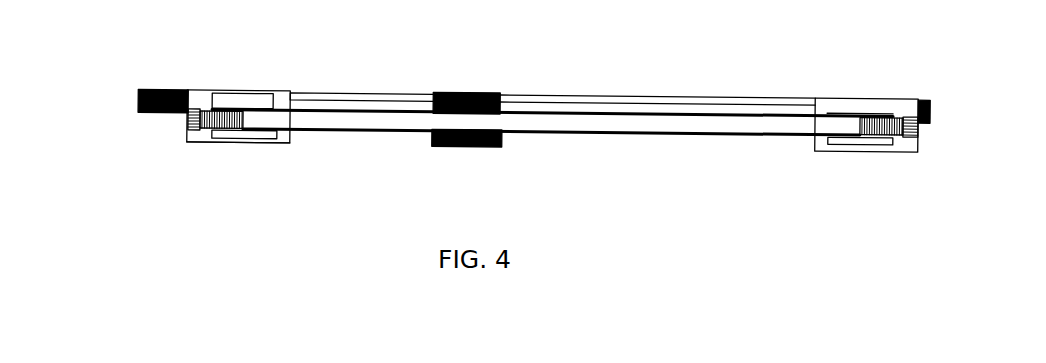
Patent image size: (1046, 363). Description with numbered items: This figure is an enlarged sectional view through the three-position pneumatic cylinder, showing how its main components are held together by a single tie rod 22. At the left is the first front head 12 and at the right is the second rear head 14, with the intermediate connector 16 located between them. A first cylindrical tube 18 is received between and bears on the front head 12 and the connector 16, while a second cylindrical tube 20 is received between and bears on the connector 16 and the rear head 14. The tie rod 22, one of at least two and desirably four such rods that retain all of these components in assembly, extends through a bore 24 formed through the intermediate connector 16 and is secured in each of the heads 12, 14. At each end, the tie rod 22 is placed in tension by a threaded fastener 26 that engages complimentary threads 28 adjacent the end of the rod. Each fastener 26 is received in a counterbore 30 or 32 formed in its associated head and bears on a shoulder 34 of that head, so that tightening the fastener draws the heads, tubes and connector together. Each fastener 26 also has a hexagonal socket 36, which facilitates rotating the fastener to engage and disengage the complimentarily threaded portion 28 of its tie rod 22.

The first front head 12 is at (276, 146).
The second rear head 14 is at (814, 149).
The intermediate connector 16 is at (479, 149).
The first cylindrical tube 18 is at (388, 92).
The second cylindrical tube 20 is at (642, 97).
The tie rod 22 is at (620, 133).
The bore 24 is at (442, 113).
The threaded fastener 26 is at (188, 131).
The complimentary threads 28 is at (227, 127).
The counterbore 30 is at (260, 103).
The counterbore 32 is at (197, 142).
The shoulder 34 is at (212, 103).
The hexagonal socket 36 is at (188, 120).